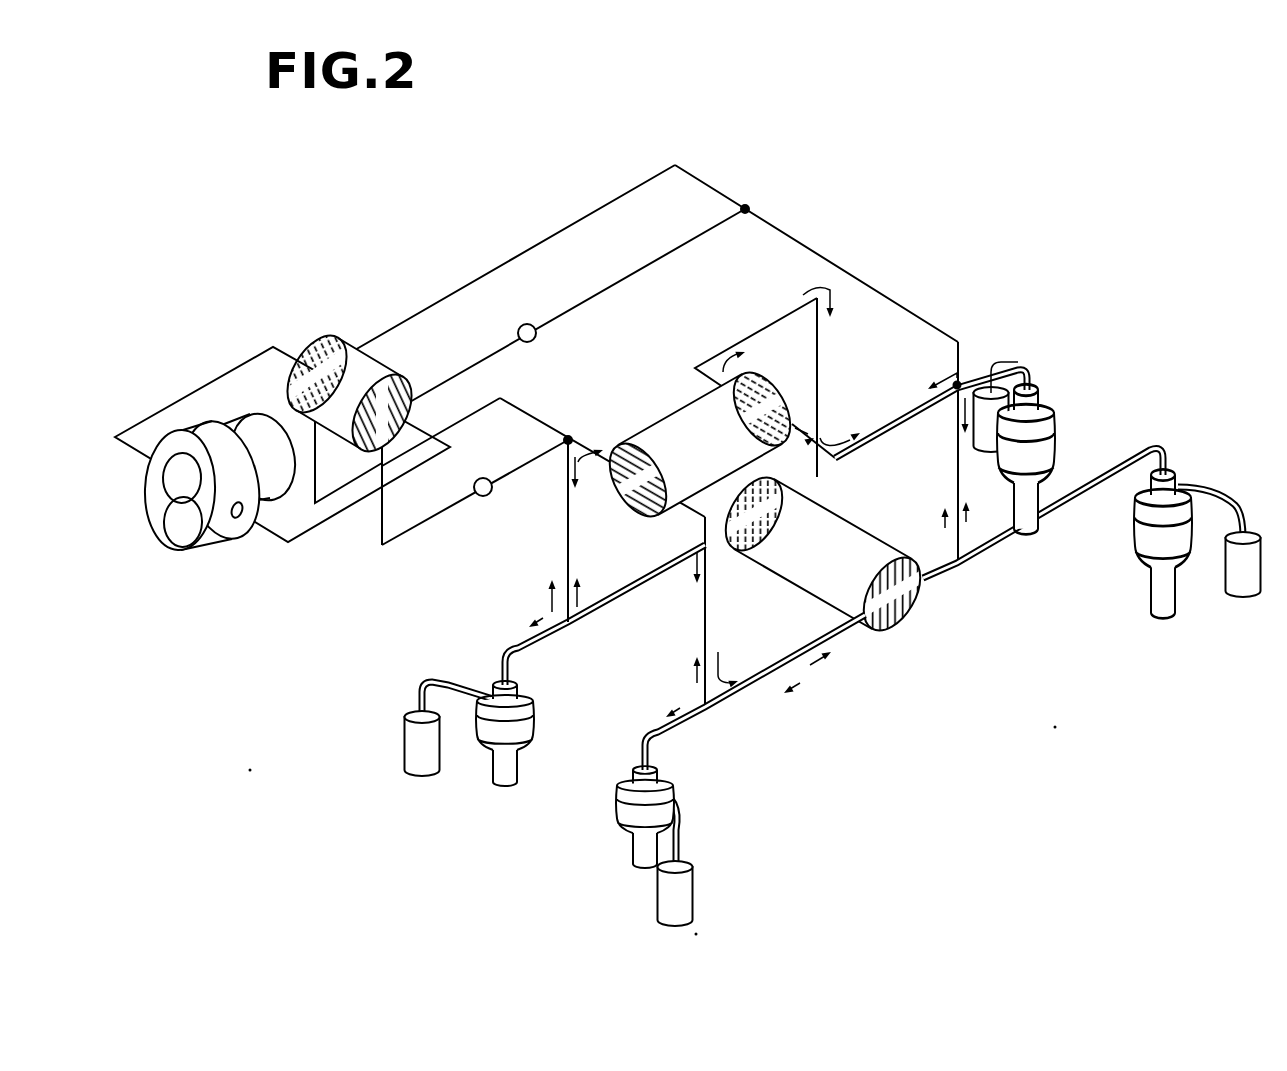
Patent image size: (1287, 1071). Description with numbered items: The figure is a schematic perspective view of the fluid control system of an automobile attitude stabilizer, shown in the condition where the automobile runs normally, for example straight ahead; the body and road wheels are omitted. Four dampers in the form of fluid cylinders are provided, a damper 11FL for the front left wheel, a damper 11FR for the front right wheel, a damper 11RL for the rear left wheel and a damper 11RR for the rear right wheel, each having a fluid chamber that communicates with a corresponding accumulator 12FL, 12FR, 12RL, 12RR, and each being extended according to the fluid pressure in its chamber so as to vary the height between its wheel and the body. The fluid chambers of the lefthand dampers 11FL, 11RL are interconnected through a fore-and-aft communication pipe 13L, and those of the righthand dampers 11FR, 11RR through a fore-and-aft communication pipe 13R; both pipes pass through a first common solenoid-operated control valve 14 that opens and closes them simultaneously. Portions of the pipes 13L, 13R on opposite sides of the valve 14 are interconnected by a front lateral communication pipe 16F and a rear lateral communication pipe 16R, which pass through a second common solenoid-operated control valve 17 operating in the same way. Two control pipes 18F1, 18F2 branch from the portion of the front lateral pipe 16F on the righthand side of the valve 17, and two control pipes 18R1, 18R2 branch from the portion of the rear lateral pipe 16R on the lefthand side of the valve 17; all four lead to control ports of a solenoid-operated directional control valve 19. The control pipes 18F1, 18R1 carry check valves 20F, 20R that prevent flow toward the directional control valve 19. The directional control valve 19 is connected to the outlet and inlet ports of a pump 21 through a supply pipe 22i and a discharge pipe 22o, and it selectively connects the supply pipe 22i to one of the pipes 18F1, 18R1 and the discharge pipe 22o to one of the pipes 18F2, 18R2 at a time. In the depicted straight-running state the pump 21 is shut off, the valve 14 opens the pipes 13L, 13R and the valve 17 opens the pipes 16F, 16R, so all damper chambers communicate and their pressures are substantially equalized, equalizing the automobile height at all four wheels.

The damper 11FR is at (523, 720).
The damper 11FL is at (623, 815).
The damper 11RR is at (1045, 453).
The damper 11RL is at (1142, 537).
The accumulator 12FR is at (423, 768).
The accumulator 12FL is at (690, 900).
The accumulator 12RR is at (977, 380).
The accumulator 12RL is at (1247, 588).
The fore-and-aft communication pipe 13R is at (633, 592).
The fore-and-aft communication pipe 13L is at (838, 650).
The first common solenoid-operated control valve 14 is at (847, 545).
The front lateral communication pipe 16F is at (708, 625).
The rear lateral communication pipe 16R is at (957, 478).
The second common solenoid-operated control valve 17 is at (677, 412).
The control pipe 18F1 is at (527, 465).
The control pipe 18F2 is at (537, 420).
The control pipe 18R1 is at (690, 243).
The control pipe 18R2 is at (608, 202).
The solenoid-operated directional control valve 19 is at (373, 368).
The check valve 20F is at (480, 497).
The check valve 20R is at (527, 323).
The pump 21 is at (152, 497).
The discharge pipe 22o is at (208, 382).
The supply pipe 22i is at (337, 514).